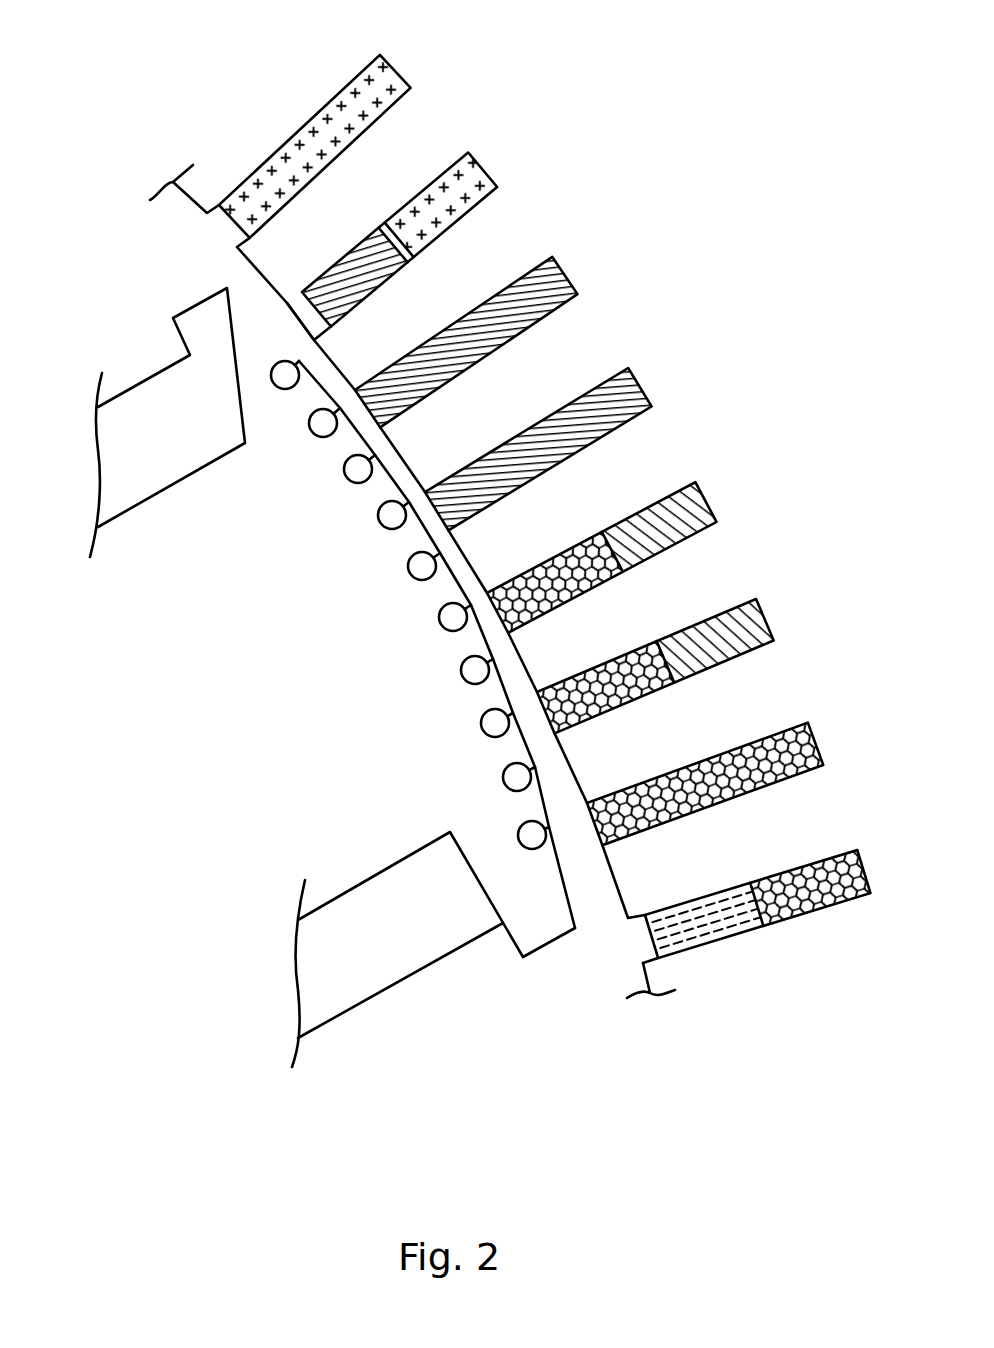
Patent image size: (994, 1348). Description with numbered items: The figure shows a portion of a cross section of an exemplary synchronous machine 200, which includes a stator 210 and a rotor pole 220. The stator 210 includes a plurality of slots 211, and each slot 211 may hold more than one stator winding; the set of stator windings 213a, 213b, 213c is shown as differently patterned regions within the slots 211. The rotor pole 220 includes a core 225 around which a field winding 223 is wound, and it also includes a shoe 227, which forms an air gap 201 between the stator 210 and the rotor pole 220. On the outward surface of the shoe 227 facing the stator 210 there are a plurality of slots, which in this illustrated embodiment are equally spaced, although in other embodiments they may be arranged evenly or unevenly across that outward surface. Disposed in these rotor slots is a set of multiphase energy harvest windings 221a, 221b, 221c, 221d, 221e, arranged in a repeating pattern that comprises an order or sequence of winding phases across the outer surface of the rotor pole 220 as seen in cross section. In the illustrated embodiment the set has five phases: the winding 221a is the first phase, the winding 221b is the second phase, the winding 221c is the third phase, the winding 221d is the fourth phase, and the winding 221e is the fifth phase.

The synchronous machine 200 is at (489, 1043).
The air gap 201 is at (276, 318).
The stator 210 is at (455, 581).
The slot 211 is at (558, 489).
The stator winding 213a is at (575, 583).
The stator winding 213b is at (296, 186).
The stator winding 213c is at (372, 276).
The rotor pole 220 is at (133, 830).
The energy harvest winding 221a is at (274, 366).
The energy harvest winding 221b is at (312, 414).
The energy harvest winding 221c is at (347, 460).
The energy harvest winding 221d is at (381, 506).
The energy harvest winding 221e is at (411, 557).
The field winding 223 is at (136, 370).
The core 225 is at (305, 360).
The shoe 227 is at (548, 920).